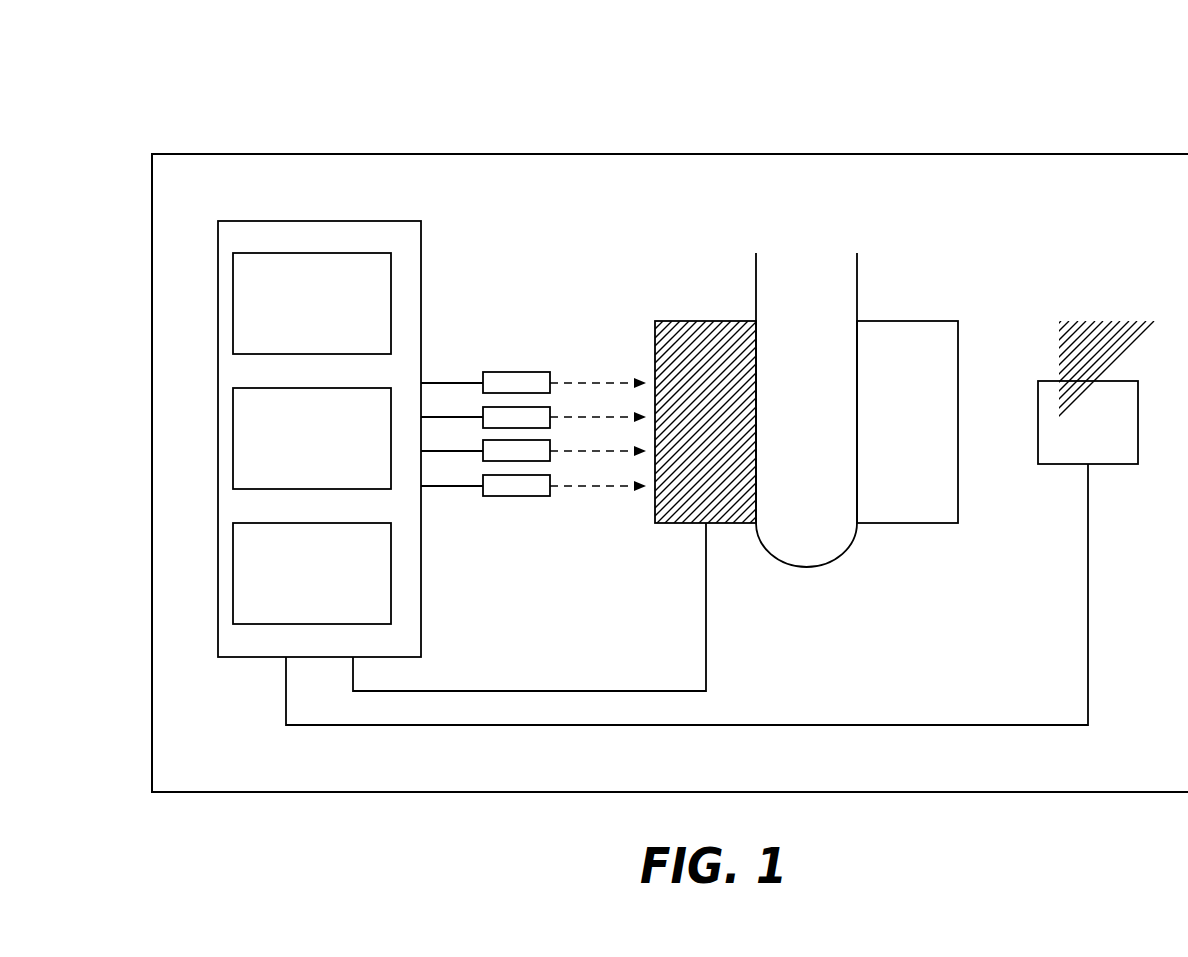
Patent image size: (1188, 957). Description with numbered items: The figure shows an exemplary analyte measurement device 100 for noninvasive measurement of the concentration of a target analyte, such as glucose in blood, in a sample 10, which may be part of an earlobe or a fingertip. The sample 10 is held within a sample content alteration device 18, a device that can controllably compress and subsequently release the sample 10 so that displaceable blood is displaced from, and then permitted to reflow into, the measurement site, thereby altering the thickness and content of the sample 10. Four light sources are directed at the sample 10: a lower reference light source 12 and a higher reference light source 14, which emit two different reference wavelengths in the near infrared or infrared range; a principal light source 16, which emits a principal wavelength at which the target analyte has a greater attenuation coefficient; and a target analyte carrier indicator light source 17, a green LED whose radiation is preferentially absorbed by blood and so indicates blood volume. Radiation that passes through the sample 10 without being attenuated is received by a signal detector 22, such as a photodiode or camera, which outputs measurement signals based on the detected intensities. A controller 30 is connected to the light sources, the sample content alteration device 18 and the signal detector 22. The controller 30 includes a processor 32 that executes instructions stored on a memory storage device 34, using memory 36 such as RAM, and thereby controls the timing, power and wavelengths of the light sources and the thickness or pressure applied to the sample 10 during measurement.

The analyte measurement device 100 is at (1119, 119).
The controller 30 is at (237, 659).
The processor 32 is at (233, 303).
The memory storage device 34 is at (233, 572).
The memory 36 is at (233, 438).
The reference light source 12 is at (483, 373).
The reference light source 14 is at (483, 412).
The principal light source 16 is at (483, 462).
The target analyte carrier indicator light source 17 is at (488, 497).
The sample content alteration device 18 is at (907, 321).
The sample 10 is at (812, 567).
The signal detector 22 is at (1087, 381).